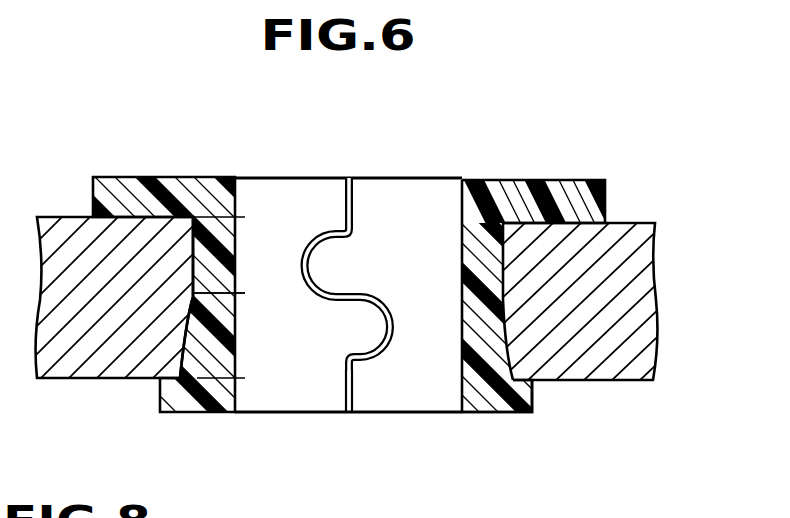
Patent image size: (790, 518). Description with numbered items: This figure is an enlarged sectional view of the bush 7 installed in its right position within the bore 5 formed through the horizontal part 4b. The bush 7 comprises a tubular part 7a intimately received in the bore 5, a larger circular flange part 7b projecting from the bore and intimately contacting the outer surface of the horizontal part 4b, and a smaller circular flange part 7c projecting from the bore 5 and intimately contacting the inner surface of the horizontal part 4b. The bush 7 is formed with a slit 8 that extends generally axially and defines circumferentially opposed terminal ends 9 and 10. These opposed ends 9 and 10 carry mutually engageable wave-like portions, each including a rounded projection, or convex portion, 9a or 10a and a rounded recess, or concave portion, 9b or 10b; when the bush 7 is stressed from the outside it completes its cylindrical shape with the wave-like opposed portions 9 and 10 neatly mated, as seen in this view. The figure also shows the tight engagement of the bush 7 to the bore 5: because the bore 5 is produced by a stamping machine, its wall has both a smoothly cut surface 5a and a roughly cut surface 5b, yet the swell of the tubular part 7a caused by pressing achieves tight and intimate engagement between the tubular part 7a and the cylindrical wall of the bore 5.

The horizontal part 4b is at (70, 217).
The bore 5 is at (255, 297).
The smoothly cut surface 5a is at (246, 218).
The roughly cut surface 5b is at (243, 335).
The bush 7 is at (492, 180).
The tubular part 7a is at (507, 246).
The larger circular flange part 7b is at (605, 180).
The smaller circular flange part 7c is at (532, 396).
The slit 8 is at (362, 312).
The terminal end 9 is at (369, 287).
The rounded projection 9a is at (373, 317).
The rounded recess 9b is at (320, 251).
The terminal end 10 is at (351, 396).
The rounded projection 10a is at (332, 282).
The rounded recess 10b is at (370, 362).